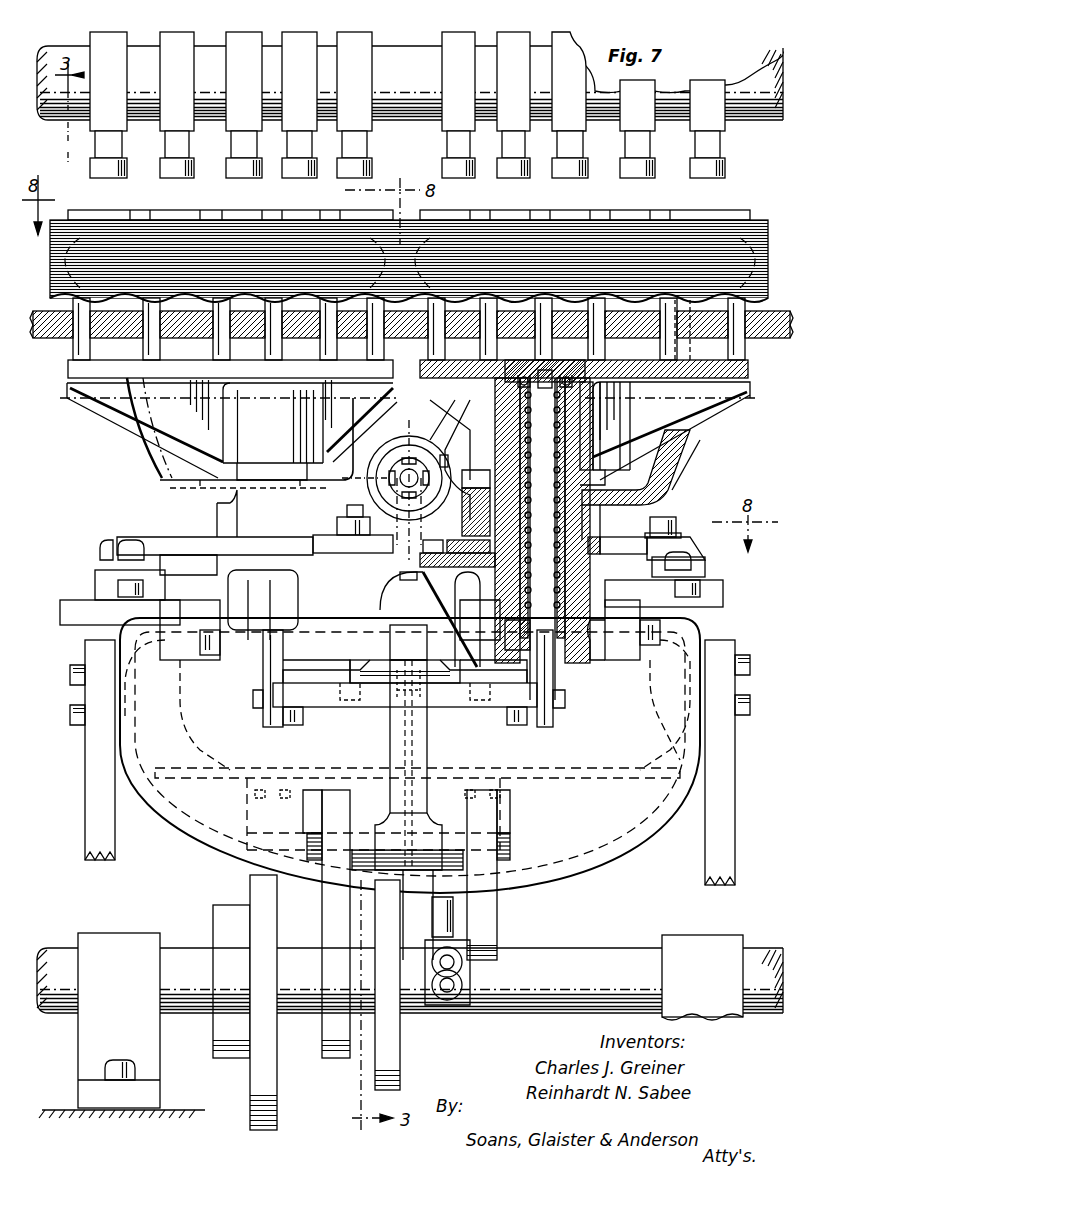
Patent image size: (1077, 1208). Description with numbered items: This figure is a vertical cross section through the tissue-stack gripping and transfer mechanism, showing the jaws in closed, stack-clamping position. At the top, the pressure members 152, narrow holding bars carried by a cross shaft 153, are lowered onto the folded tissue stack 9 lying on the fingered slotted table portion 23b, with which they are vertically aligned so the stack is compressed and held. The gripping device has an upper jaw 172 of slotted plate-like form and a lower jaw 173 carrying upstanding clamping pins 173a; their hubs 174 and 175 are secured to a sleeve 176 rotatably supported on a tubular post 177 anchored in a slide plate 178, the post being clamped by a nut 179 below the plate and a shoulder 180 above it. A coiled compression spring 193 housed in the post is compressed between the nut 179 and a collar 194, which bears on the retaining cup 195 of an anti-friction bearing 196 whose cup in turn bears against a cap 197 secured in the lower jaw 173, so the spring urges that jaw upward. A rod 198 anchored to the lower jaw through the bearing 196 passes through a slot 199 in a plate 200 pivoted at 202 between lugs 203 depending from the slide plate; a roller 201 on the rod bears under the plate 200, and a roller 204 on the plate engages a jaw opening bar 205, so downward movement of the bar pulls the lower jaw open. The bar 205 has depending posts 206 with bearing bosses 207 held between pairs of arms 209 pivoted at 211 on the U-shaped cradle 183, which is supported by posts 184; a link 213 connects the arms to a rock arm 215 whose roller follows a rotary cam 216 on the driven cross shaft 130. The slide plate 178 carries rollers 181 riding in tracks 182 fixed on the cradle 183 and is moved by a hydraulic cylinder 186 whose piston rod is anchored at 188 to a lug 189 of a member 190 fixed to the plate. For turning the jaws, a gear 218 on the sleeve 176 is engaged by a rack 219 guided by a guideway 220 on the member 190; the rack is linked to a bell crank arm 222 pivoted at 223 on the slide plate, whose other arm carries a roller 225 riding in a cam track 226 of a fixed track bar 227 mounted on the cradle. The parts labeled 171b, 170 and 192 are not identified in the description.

The cross shaft 153 is at (422, 88).
The pressure members 152 is at (624, 168).
The upper jaw 172 is at (680, 210).
The stack 9 is at (773, 240).
The slotted table portion 23b is at (411, 330).
The frame 171b is at (167, 485).
The support 170 is at (224, 515).
The member 190 is at (353, 529).
The guideway 220 is at (418, 556).
The hydraulic cylinder 186 is at (405, 440).
The anchorage 188 is at (402, 467).
The lug 189 is at (417, 490).
The tubular post 177 is at (450, 460).
The retaining cup 195 is at (450, 411).
The anti-friction bearing 196 is at (540, 363).
The cap 197 is at (560, 364).
The shoulder 180 is at (534, 539).
The nut 179 is at (497, 630).
The lower jaw 173 is at (750, 377).
The clamping pins 173a is at (734, 347).
The collar 194 is at (622, 426).
The hub 175 is at (628, 426).
The coiled compression spring 193 is at (618, 434).
The sleeve 176 is at (622, 460).
The hub 174 is at (600, 490).
The gear 218 is at (610, 540).
The bell crank arm 222 is at (645, 537).
The bell crank pivot 223 is at (676, 520).
The cam track 226 is at (713, 591).
The track bar 227 is at (720, 594).
The roller 225 is at (687, 597).
The rollers 181 is at (627, 633).
The tracks 182 is at (642, 665).
The slide plate 178 is at (432, 580).
The rack 219 is at (455, 579).
The lugs 203 is at (448, 620).
The rod 198 is at (263, 671).
The slot 199 is at (253, 700).
The plate 200 is at (443, 705).
The pivot 202 is at (378, 658).
The jaw opening bar 205 is at (424, 650).
The roller 204 is at (395, 703).
The roller 201 is at (295, 725).
The depending posts 206 is at (427, 752).
The cradle 183 is at (207, 840).
The pivot 211 is at (258, 810).
The supporting posts 184 is at (86, 828).
The arms 209 is at (336, 902).
The bearing bosses 207 is at (455, 860).
The rock arm 215 is at (455, 910).
The link 213 is at (453, 996).
The cross shaft 130 is at (645, 922).
The disk 192 is at (276, 1097).
The rotary cam 216 is at (400, 1054).